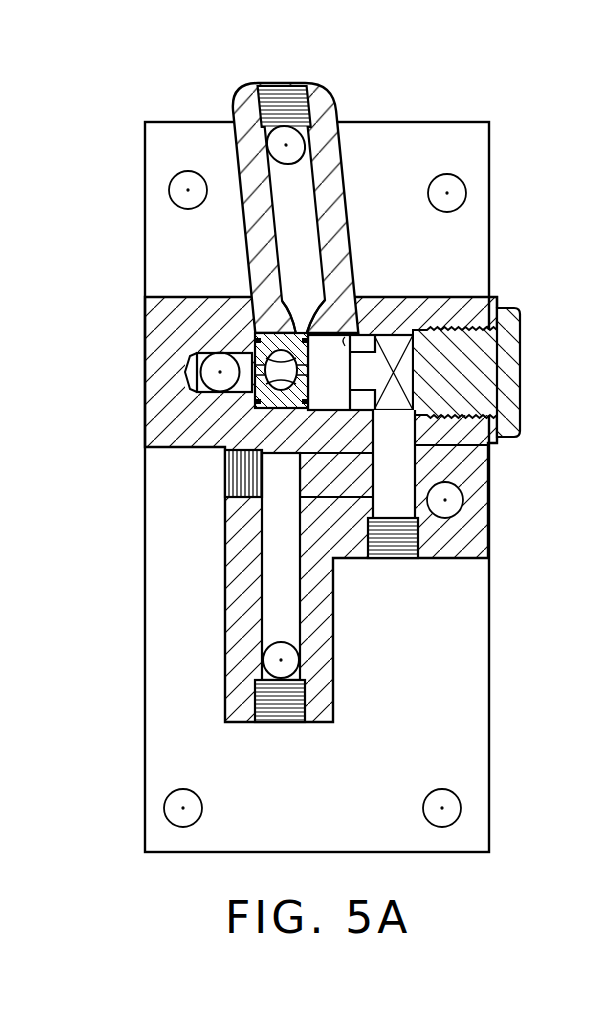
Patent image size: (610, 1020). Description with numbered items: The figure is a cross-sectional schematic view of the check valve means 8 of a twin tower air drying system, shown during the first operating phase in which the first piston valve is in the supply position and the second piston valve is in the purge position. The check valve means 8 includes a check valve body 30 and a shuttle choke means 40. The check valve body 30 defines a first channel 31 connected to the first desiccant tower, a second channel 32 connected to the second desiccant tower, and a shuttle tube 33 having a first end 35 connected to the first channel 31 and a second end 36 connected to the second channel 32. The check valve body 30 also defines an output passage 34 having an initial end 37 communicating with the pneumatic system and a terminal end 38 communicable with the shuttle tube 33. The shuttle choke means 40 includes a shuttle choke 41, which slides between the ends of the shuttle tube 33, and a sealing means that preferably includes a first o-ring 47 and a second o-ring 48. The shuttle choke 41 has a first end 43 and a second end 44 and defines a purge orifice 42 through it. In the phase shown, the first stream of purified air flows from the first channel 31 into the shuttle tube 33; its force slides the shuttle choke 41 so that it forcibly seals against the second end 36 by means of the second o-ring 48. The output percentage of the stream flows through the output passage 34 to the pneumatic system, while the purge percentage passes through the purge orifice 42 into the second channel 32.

The check valve means 8 is at (113, 138).
The check valve body 30 is at (489, 512).
The first channel 31 is at (363, 370).
The second channel 32 is at (240, 367).
The shuttle tube 33 is at (333, 398).
The output passage 34 is at (303, 188).
The first end 35 is at (417, 298).
The second end 36 is at (255, 398).
The initial end 37 is at (305, 107).
The terminal end 38 is at (283, 331).
The shuttle choke means 40 is at (257, 440).
The shuttle choke 41 is at (300, 420).
The purge orifice 42 is at (307, 344).
The first end 43 is at (342, 383).
The second end 44 is at (255, 365).
The first o-ring 47 is at (323, 305).
The second o-ring 48 is at (257, 340).